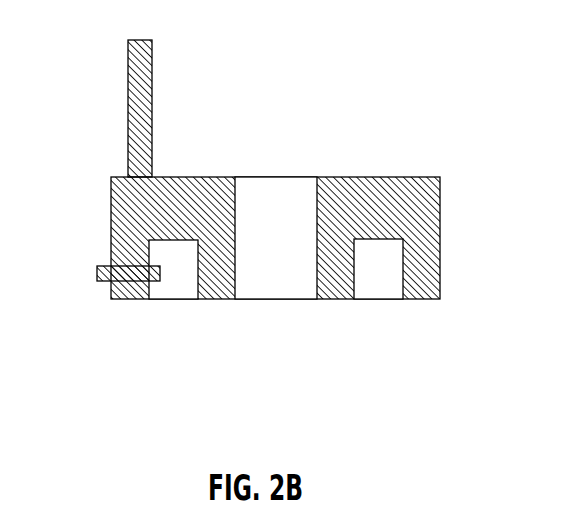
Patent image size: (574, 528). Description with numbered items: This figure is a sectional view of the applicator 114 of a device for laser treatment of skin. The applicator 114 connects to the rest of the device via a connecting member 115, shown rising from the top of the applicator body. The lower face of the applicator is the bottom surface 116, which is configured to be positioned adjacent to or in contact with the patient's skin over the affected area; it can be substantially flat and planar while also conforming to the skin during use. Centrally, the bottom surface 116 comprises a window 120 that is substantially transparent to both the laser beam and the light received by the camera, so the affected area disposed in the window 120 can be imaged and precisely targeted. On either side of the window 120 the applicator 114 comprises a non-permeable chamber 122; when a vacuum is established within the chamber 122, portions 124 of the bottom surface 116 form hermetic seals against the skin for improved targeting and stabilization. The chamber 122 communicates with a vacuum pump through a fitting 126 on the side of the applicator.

The applicator 114 is at (225, 212).
The connecting member 115 is at (151, 72).
The bottom surface 116 is at (111, 200).
The window 120 is at (259, 310).
The non-permeable chamber 122 is at (166, 310).
The portions of bottom surface 124 is at (117, 300).
The fitting 126 is at (97, 278).